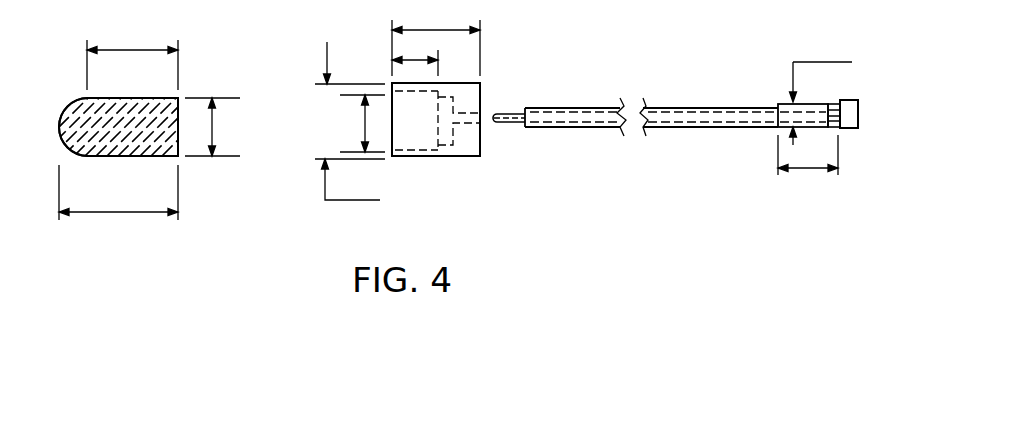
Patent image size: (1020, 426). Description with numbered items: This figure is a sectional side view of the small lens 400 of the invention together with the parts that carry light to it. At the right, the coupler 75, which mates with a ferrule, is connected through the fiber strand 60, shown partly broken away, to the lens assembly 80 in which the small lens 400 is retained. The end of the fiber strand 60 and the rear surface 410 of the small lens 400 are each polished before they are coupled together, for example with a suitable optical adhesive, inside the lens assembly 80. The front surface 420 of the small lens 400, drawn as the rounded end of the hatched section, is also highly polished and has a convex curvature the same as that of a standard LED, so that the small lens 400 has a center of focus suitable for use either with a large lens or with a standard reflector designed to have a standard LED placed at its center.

The small lens 400 is at (162, 186).
The rear surface 410 is at (177, 118).
The front surface 420 is at (57, 133).
The lens assembly 80 is at (458, 151).
The fiber strand 60 is at (577, 107).
The coupler 75 is at (807, 117).